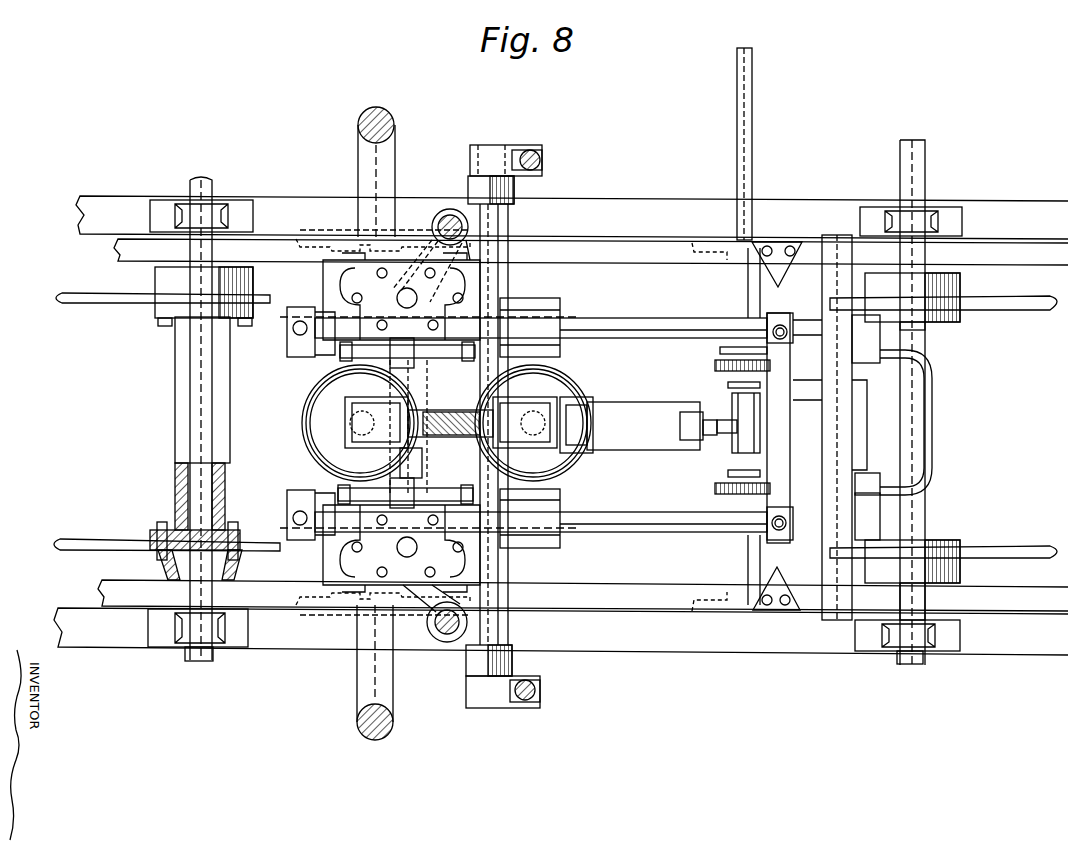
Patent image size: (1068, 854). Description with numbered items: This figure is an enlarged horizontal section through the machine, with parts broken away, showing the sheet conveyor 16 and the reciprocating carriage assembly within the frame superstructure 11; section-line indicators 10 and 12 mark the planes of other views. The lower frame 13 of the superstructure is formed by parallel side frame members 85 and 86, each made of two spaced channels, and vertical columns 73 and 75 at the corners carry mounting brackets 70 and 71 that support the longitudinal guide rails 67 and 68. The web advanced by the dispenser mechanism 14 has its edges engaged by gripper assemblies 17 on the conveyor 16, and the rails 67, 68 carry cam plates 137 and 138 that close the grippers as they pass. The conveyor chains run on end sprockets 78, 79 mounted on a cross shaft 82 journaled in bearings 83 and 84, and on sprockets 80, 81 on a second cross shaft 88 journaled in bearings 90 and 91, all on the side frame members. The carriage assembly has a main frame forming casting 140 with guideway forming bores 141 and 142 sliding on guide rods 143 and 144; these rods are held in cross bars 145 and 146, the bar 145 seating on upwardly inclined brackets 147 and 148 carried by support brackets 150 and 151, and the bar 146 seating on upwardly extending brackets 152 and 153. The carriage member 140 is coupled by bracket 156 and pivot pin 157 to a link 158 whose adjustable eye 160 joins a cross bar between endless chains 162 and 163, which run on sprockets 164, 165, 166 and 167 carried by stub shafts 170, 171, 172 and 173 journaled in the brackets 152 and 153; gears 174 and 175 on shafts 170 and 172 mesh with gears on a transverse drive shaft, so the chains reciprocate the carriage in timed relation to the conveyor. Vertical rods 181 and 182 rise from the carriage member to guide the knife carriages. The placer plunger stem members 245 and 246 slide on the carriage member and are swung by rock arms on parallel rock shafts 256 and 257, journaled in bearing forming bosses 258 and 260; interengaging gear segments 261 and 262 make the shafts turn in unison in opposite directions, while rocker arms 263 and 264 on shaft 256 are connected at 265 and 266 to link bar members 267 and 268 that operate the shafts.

The section line 10- 10 is at (185, 668).
The frame superstructure 11 is at (1020, 125).
The section line 12- 12 is at (533, 120).
The lower frame 13 is at (430, 78).
The dispenser mechanism 14 is at (407, 621).
The sheet conveyor 16 is at (46, 288).
The gripper assemblies 17 is at (332, 356).
The guide rail 67 is at (630, 604).
The guide rail 68 is at (620, 251).
The mounting bracket 70 is at (365, 675).
The mounting bracket 71 is at (396, 180).
The vertical column 73 is at (371, 741).
The vertical column 75 is at (358, 120).
The end sprocket 78 is at (1000, 547).
The end sprocket 79 is at (1008, 310).
The end sprocket 80 is at (108, 540).
The end sprocket 81 is at (108, 304).
The cross shaft 82 is at (912, 665).
The bearing 83 is at (923, 622).
The bearing 84 is at (930, 220).
The side frame member 85 is at (832, 634).
The side frame member 86 is at (843, 212).
The cross shaft 88 is at (192, 482).
The bearing 90 is at (226, 647).
The bearing 91 is at (218, 215).
The cam plate 137 is at (760, 568).
The cam plate 138 is at (758, 280).
The main frame forming casting 140 is at (521, 308).
The guideway forming bore 141 is at (564, 537).
The guideway forming bore 142 is at (550, 318).
The guide rod 143 is at (630, 533).
The guide rod 144 is at (619, 320).
The cross bar 145 is at (300, 409).
The cross bar 146 is at (790, 430).
The upwardly inclined bracket 147 is at (290, 495).
The upwardly inclined bracket 148 is at (290, 353).
The support bracket 150 is at (250, 593).
The support bracket 151 is at (326, 282).
The upwardly extending bracket 152 is at (808, 540).
The upwardly extending bracket 153 is at (790, 322).
The bracket 156 is at (593, 475).
The pivot pin 157 is at (598, 455).
The link 158 is at (641, 447).
The adjustable eye 160 is at (735, 440).
The endless chain 162 is at (812, 466).
The endless chain 163 is at (805, 382).
The sprocket 164 is at (728, 472).
The sprocket 165 is at (880, 470).
The sprocket 166 is at (722, 385).
The sprocket 167 is at (905, 395).
The stub shaft 170 is at (732, 541).
The stub shaft 171 is at (878, 480).
The stub shaft 172 is at (730, 372).
The stub shaft 173 is at (880, 364).
The gear 174 is at (720, 488).
The gear 175 is at (720, 350).
The vertical rod 181 is at (438, 638).
The vertical rod 182 is at (440, 220).
The stem member 245 is at (568, 396).
The stem member 246 is at (350, 405).
The rock shaft 256 is at (562, 374).
The rock shaft 257 is at (400, 386).
The bearing forming bosses 258 is at (515, 189).
The bearing forming bosses 260 is at (445, 410).
The gear segment 261 is at (462, 439).
The gear segment 262 is at (436, 408).
The rocker arm 263 is at (520, 708).
The rocker arm 264 is at (510, 152).
The connection 265 is at (544, 683).
The connection 266 is at (545, 165).
The link bar member 267 is at (539, 693).
The link bar member 268 is at (541, 158).